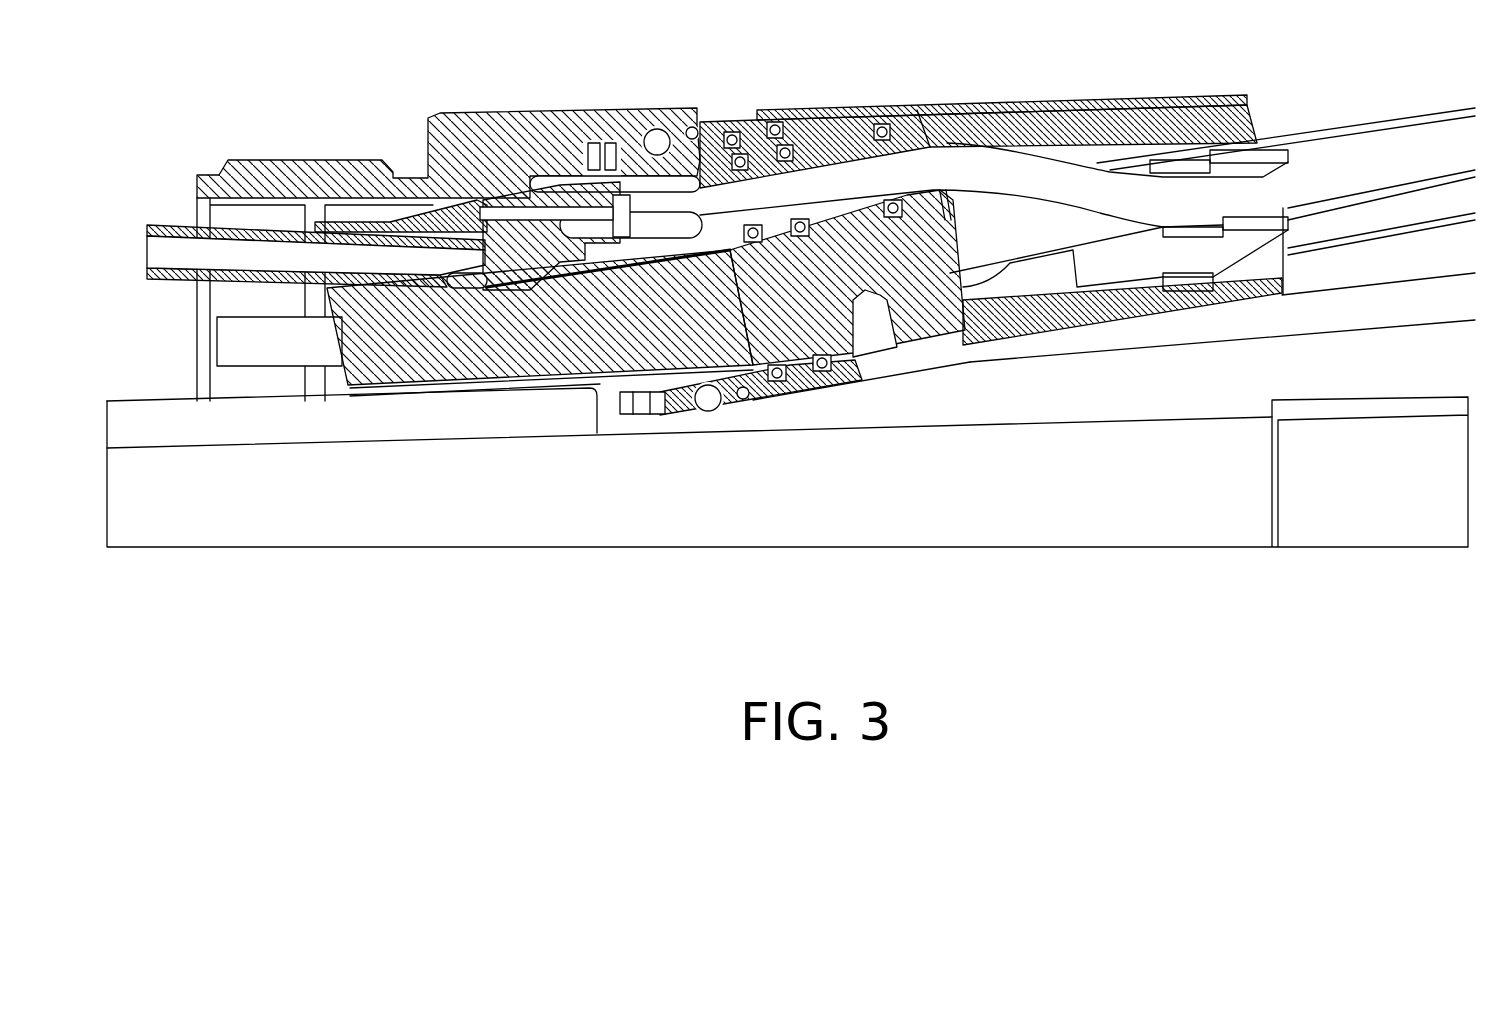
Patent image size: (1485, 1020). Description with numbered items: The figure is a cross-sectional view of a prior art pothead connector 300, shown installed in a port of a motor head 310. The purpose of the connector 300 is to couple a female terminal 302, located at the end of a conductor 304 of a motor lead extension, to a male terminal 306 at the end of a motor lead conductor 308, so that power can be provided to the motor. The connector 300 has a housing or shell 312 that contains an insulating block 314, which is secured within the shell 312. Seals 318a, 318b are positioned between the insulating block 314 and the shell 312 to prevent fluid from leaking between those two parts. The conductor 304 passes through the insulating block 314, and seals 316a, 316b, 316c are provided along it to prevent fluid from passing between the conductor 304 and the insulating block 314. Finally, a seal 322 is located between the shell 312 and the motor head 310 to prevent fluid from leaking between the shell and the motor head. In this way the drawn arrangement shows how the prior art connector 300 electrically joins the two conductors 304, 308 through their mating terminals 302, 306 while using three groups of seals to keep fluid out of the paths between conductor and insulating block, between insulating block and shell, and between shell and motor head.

The connector 300 is at (771, 75).
The female terminal 302 is at (517, 200).
The conductor 304 is at (1283, 148).
The male terminal 306 is at (485, 222).
The motor lead conductor 308 is at (178, 273).
The motor head 310 is at (300, 159).
The shell 312 is at (825, 116).
The insulating block 314 is at (950, 315).
The seal 316a is at (757, 250).
The seal 316b is at (805, 240).
The seal 316c is at (897, 220).
The seal 318a is at (777, 382).
The seal 318b is at (822, 372).
The seal 322 is at (656, 129).